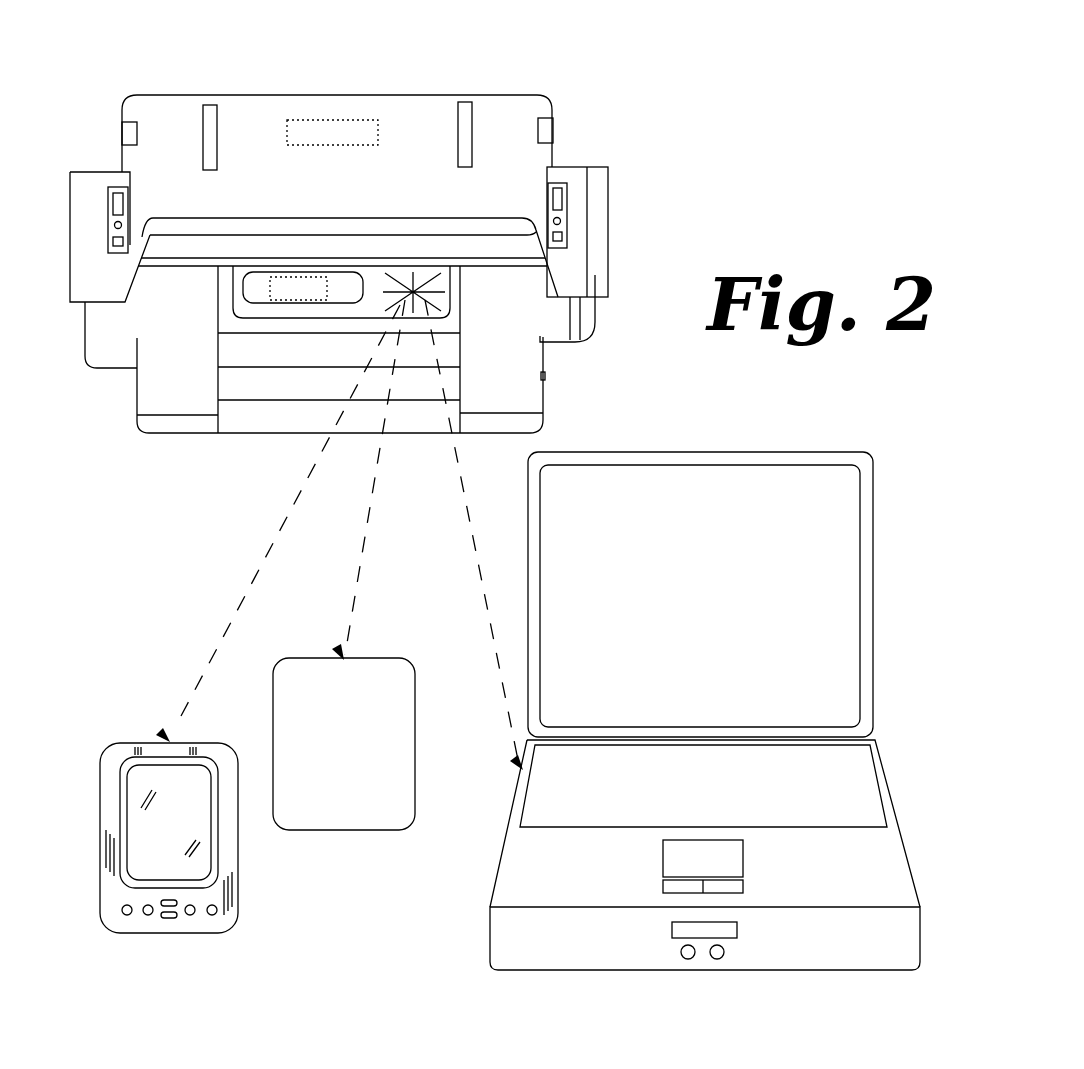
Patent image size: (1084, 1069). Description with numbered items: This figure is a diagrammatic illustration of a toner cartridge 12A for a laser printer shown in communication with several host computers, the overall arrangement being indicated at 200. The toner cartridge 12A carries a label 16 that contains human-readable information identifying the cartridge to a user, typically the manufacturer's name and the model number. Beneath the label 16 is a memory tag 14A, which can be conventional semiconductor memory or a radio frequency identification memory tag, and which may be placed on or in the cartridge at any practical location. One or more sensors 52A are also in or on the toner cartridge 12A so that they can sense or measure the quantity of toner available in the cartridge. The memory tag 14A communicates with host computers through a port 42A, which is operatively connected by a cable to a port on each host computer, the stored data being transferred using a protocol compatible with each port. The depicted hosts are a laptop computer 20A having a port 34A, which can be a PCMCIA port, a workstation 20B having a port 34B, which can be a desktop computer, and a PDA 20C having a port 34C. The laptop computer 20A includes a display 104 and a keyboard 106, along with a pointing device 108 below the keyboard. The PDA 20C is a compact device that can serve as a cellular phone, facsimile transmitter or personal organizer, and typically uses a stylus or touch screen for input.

The wireless printing system 200 is at (727, 167).
The toner cartridge 12A is at (430, 84).
The sensors 52A is at (285, 118).
The memory tag 14A is at (250, 302).
The label 16 is at (288, 292).
The port 42A is at (600, 390).
The laptop computer 20A is at (813, 434).
The display 104 is at (757, 589).
The keyboard 106 is at (717, 812).
The pointing device 108 is at (745, 858).
The port 34A is at (523, 770).
The workstation 20B is at (348, 866).
The port 34B is at (344, 660).
The PDA 20C is at (207, 942).
The port 34C is at (170, 742).